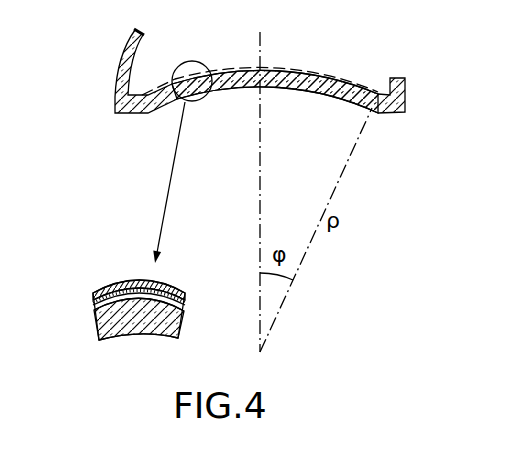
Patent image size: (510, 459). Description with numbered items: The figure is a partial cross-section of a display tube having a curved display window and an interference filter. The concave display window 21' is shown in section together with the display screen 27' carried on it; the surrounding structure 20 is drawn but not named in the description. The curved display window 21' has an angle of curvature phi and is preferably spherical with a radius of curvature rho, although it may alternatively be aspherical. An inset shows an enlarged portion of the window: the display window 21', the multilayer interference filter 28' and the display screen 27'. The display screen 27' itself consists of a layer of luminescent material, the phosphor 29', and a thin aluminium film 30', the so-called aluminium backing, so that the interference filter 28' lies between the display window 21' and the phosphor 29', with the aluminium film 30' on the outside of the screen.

The mirror carrier / frame 20 is at (121, 57).
The concave display window 21' is at (236, 210).
The display screen 27' is at (199, 186).
The multilayer interference filter 28' is at (206, 186).
The phosphor 29' is at (161, 305).
The aluminium film 30' is at (161, 284).